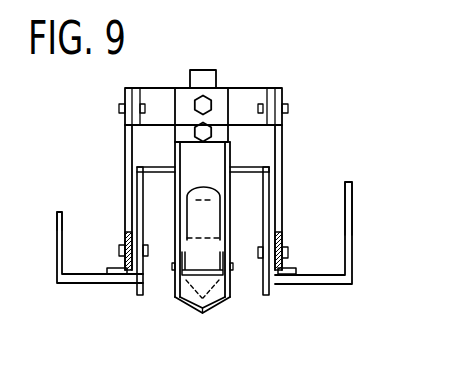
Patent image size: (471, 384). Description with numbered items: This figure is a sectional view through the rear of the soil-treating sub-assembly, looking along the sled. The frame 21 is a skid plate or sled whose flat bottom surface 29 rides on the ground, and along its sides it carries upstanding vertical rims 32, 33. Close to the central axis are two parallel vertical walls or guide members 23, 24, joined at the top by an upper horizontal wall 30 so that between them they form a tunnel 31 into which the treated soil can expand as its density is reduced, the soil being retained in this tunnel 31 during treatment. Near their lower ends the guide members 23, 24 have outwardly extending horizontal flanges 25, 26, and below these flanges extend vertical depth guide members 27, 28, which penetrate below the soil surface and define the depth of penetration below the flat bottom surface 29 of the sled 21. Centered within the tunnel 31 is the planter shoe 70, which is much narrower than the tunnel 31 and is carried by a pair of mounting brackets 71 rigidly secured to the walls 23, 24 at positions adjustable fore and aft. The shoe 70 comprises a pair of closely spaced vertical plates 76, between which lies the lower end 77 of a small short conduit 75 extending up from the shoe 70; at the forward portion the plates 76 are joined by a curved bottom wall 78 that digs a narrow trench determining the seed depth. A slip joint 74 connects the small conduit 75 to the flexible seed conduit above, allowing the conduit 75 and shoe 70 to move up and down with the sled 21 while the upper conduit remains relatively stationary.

The frame 21 is at (80, 283).
The guide member 23 is at (256, 198).
The guide member 24 is at (147, 193).
The horizontal flange 25 is at (293, 275).
The horizontal flange 26 is at (107, 269).
The depth guide member 27 is at (266, 296).
The depth guide member 28 is at (135, 293).
The flat bottom surface 29 is at (315, 285).
The upper horizontal wall 30 is at (232, 167).
The tunnel 31 is at (267, 173).
The vertical rim 32 is at (353, 234).
The vertical rim 33 is at (57, 232).
The planter shoe 70 is at (214, 323).
The mounting bracket 71 is at (125, 131).
The slip joint 74 is at (183, 233).
The small short conduit 75 is at (204, 188).
The vertical plate 76 is at (186, 303).
The lower end 77 is at (218, 306).
The curved bottom wall 78 is at (192, 311).